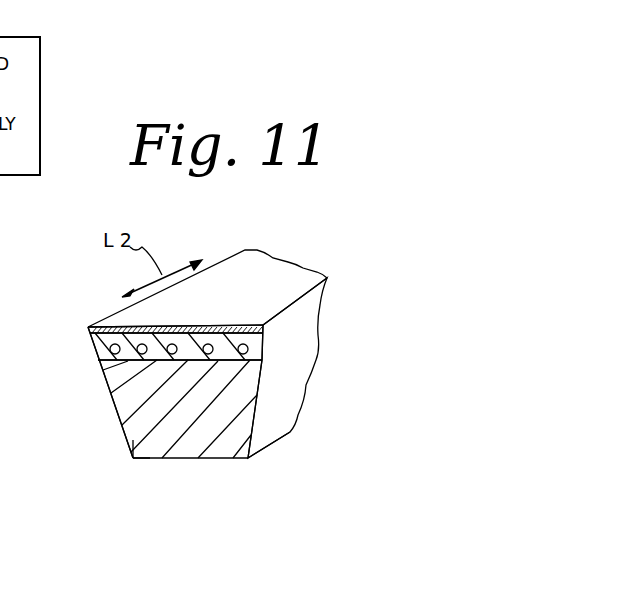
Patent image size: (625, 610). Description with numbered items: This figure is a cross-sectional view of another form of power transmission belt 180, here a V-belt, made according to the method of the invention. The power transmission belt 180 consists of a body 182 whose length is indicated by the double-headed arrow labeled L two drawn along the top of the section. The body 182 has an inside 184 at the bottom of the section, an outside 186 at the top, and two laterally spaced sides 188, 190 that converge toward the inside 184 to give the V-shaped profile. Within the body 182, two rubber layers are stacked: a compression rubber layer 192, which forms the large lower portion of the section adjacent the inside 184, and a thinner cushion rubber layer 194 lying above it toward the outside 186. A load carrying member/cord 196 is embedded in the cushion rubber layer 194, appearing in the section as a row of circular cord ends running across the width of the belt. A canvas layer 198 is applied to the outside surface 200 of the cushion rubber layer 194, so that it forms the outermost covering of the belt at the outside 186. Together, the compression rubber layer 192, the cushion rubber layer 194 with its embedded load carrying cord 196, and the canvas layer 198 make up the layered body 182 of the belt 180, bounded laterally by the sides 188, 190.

The power transmission belt 180 is at (292, 365).
The body 182 is at (107, 388).
The inside 184 is at (162, 460).
The outside 186 is at (182, 330).
The side 188 is at (122, 427).
The side 190 is at (277, 417).
The compression rubber layer 192 is at (133, 460).
The cushion rubber layer 194 is at (252, 352).
The load carrying member/cord 196 is at (100, 353).
The canvas layer 198 is at (273, 288).
The outside surface 200 is at (123, 328).